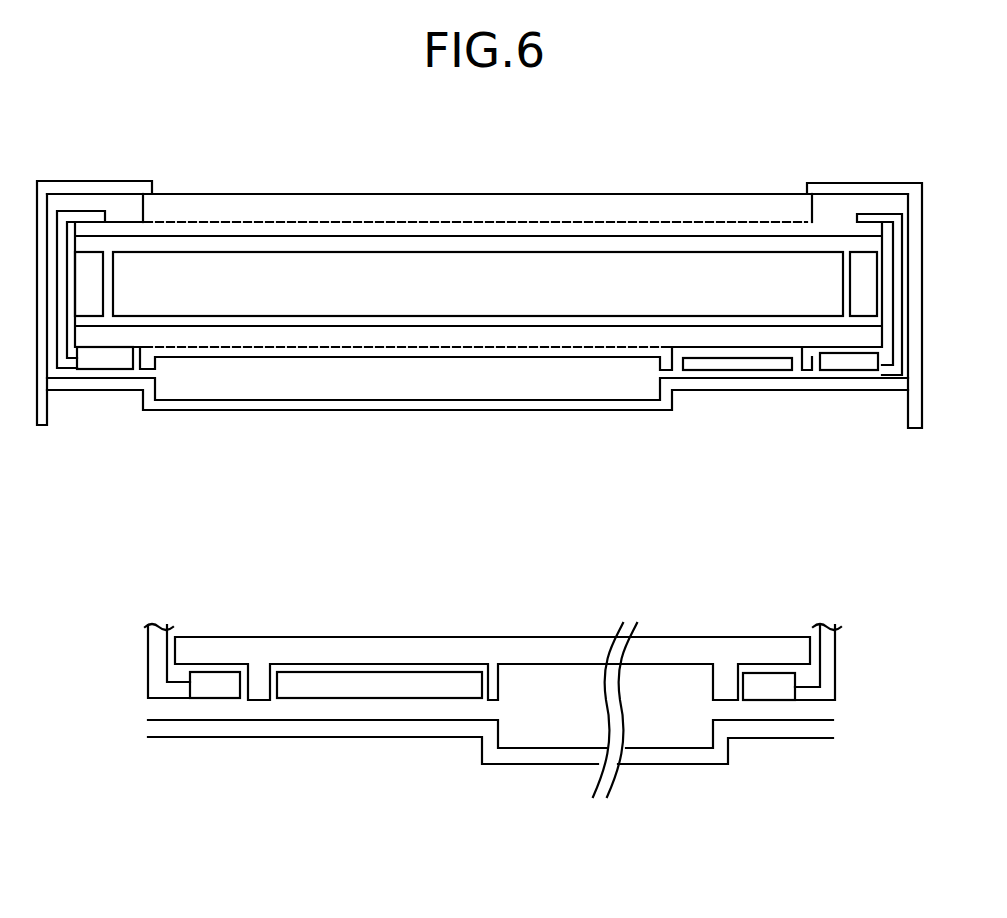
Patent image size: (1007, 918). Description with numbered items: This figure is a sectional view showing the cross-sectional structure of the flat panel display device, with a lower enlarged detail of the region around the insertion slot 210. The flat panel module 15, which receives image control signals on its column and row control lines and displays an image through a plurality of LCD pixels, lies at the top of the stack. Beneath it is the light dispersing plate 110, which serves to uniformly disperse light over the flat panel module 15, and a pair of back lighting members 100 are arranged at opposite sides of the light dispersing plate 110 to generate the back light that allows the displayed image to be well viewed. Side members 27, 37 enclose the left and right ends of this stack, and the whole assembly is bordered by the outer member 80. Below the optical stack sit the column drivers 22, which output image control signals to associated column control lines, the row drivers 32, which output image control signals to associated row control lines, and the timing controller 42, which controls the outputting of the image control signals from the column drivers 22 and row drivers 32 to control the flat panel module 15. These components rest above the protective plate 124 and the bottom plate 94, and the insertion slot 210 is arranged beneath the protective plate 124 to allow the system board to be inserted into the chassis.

The flat panel module 15 is at (340, 197).
The left side frame 27 is at (68, 225).
The right side frame 37 is at (897, 218).
The outer chassis 80 is at (920, 297).
The back lighting member 100 is at (97, 260).
The light dispersing plate 110 is at (452, 292).
The protective plate 124 is at (220, 332).
The column driver 22 is at (105, 358).
The row driver 32 is at (860, 363).
The timing controller 42 is at (738, 365).
The bottom plate 94 is at (573, 400).
The insertion slot 210 is at (640, 368).